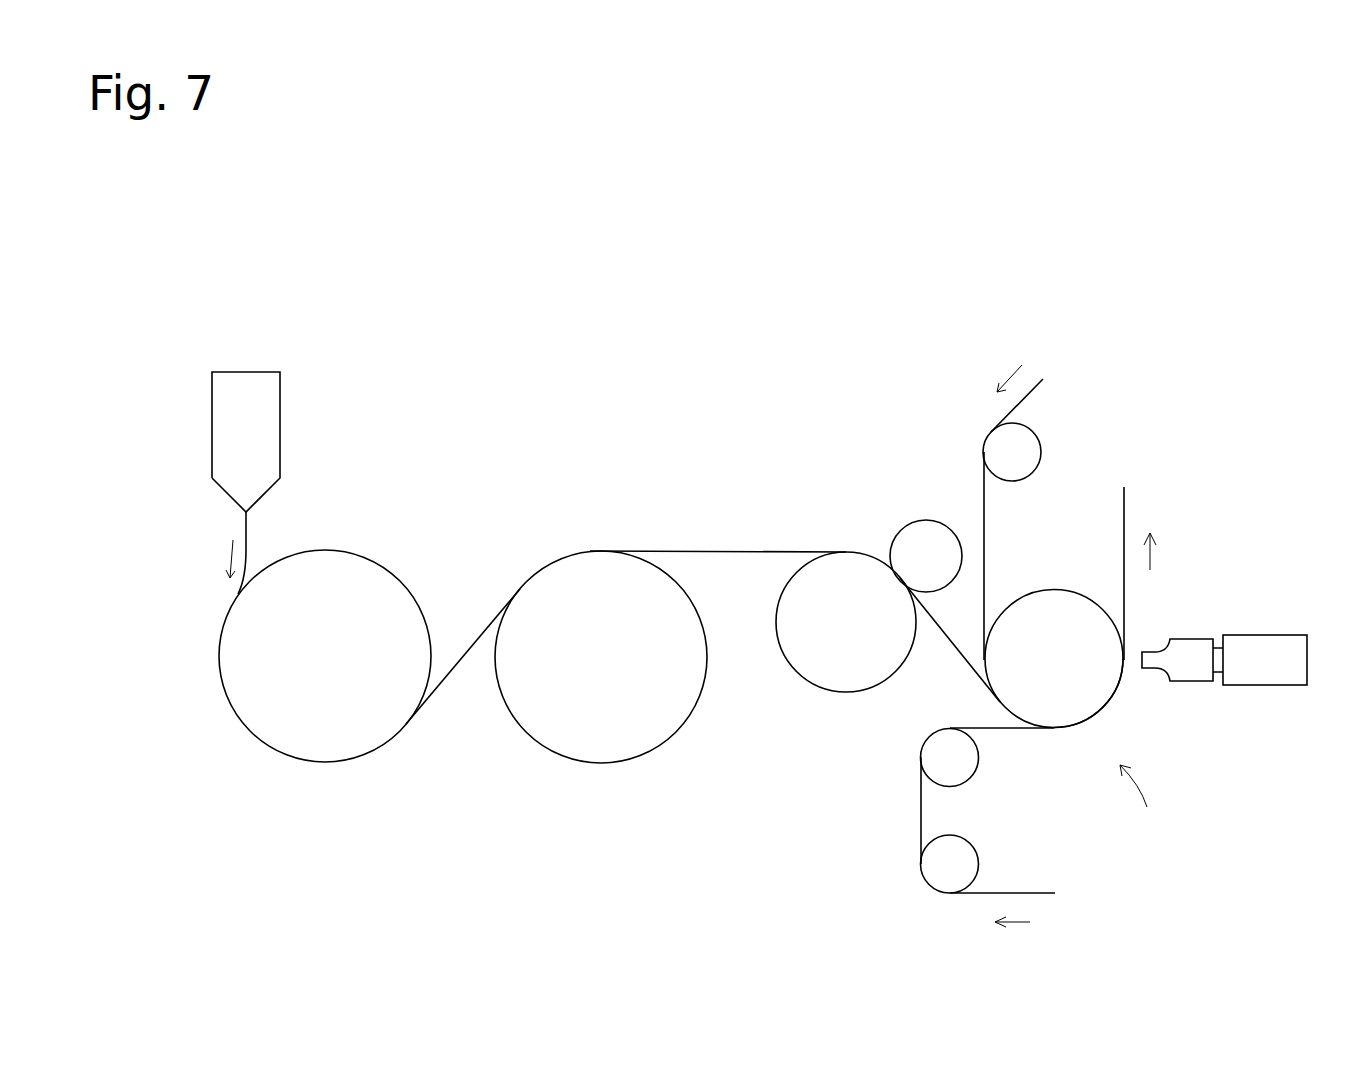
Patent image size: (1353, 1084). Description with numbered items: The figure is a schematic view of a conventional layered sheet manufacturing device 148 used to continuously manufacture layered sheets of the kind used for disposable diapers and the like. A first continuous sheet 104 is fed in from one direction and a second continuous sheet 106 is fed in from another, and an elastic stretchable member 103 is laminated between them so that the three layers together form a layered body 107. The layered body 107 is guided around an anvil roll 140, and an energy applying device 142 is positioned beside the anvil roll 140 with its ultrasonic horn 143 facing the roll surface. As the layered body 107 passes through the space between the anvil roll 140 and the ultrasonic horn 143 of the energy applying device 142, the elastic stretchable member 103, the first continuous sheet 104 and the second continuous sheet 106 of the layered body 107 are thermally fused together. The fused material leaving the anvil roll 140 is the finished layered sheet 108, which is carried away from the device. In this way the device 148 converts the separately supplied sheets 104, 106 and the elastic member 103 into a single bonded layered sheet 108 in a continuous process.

The elastic stretchable member 103 is at (460, 655).
The first continuous sheet 104 is at (1035, 390).
The second continuous sheet 106 is at (1055, 893).
The layered body 107 is at (1099, 706).
The layered sheet 108 is at (1125, 505).
The anvil roll 140 is at (1053, 588).
The energy applying device 142 is at (1279, 613).
The ultrasonic horn 143 is at (1153, 652).
The layered sheet manufacturing device 148 is at (1147, 806).